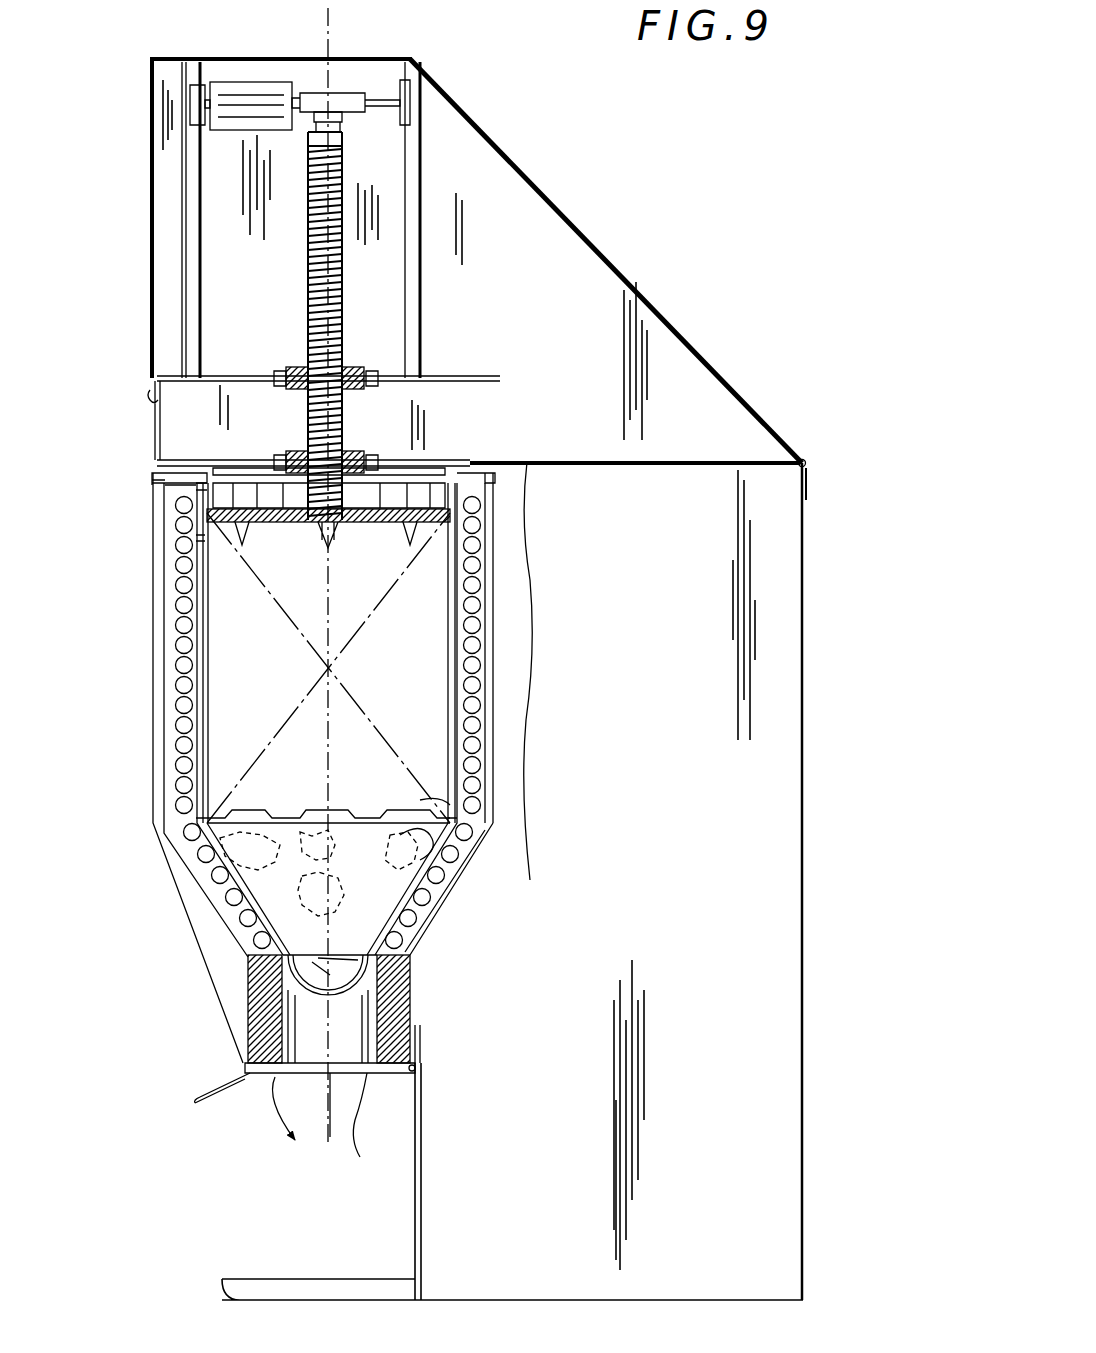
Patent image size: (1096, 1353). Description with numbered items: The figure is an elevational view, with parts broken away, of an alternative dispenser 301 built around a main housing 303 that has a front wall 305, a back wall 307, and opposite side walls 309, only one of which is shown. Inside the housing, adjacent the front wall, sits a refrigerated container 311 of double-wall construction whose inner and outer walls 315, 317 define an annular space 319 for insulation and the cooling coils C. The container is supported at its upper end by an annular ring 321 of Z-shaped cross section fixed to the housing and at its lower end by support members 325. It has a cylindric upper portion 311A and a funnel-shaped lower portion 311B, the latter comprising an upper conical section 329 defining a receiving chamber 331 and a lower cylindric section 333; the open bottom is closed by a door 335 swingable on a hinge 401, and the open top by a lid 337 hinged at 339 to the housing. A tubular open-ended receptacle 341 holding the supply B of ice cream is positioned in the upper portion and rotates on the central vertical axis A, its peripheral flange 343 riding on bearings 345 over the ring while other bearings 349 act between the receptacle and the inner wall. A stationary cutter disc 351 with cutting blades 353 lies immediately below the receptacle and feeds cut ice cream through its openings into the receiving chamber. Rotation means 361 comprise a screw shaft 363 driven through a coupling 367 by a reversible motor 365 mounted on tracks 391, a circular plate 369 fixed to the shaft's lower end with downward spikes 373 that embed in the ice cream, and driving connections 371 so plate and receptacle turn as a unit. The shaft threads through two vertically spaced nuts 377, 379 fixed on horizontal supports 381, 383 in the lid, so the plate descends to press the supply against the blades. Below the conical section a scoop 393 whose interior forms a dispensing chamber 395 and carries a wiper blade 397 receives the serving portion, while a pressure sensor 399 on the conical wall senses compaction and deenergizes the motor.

The dispenser 301 is at (648, 142).
The main housing 303 is at (808, 660).
The front wall 305 is at (153, 720).
The back wall 307 is at (806, 842).
The side walls 309 is at (768, 963).
The refrigerated container 311 is at (500, 610).
The cylindric upper portion 311A is at (498, 587).
The funnel-shaped lower portion 311B is at (500, 876).
The inner wall 315 is at (465, 747).
The outer wall 317 is at (490, 763).
The annular space 319 is at (178, 745).
The annular ring 321 is at (160, 488).
The support members 325 is at (245, 1061).
The upper conical section 329 is at (427, 938).
The receiving chamber 331 is at (372, 918).
The lower cylindric section 333 is at (418, 1000).
The door 335 is at (362, 1157).
The lid 337 is at (622, 268).
The hinge 339 is at (803, 455).
The tubular receptacle 341 is at (473, 723).
The peripheral flange 343 is at (158, 462).
The bearings 345 is at (495, 480).
The bearings 349 is at (190, 545).
The cutter disc 351 is at (457, 838).
The cutting blades 353 is at (455, 812).
The means for effecting relative rotation 361 is at (380, 83).
The screw shaft 363 is at (356, 326).
The motor 365 is at (292, 32).
The coupling 367 is at (410, 140).
The circular plate 369 is at (440, 467).
The driving connections 371 is at (490, 522).
The spikes 373 is at (350, 548).
The nut 377 is at (300, 372).
The nut 379 is at (157, 425).
The horizontal support 381 is at (465, 372).
The horizontal support 383 is at (430, 450).
The tracks 391 is at (425, 170).
The scoop 393 is at (420, 1025).
The dispensing chamber 395 is at (273, 1000).
The wiper blade 397 is at (420, 978).
The pressure sensor 399 is at (247, 943).
The hinge 401 is at (412, 1072).
The central vertical axis A is at (345, 40).
The supply of ice cream B is at (190, 770).
The cooling coils C is at (480, 640).